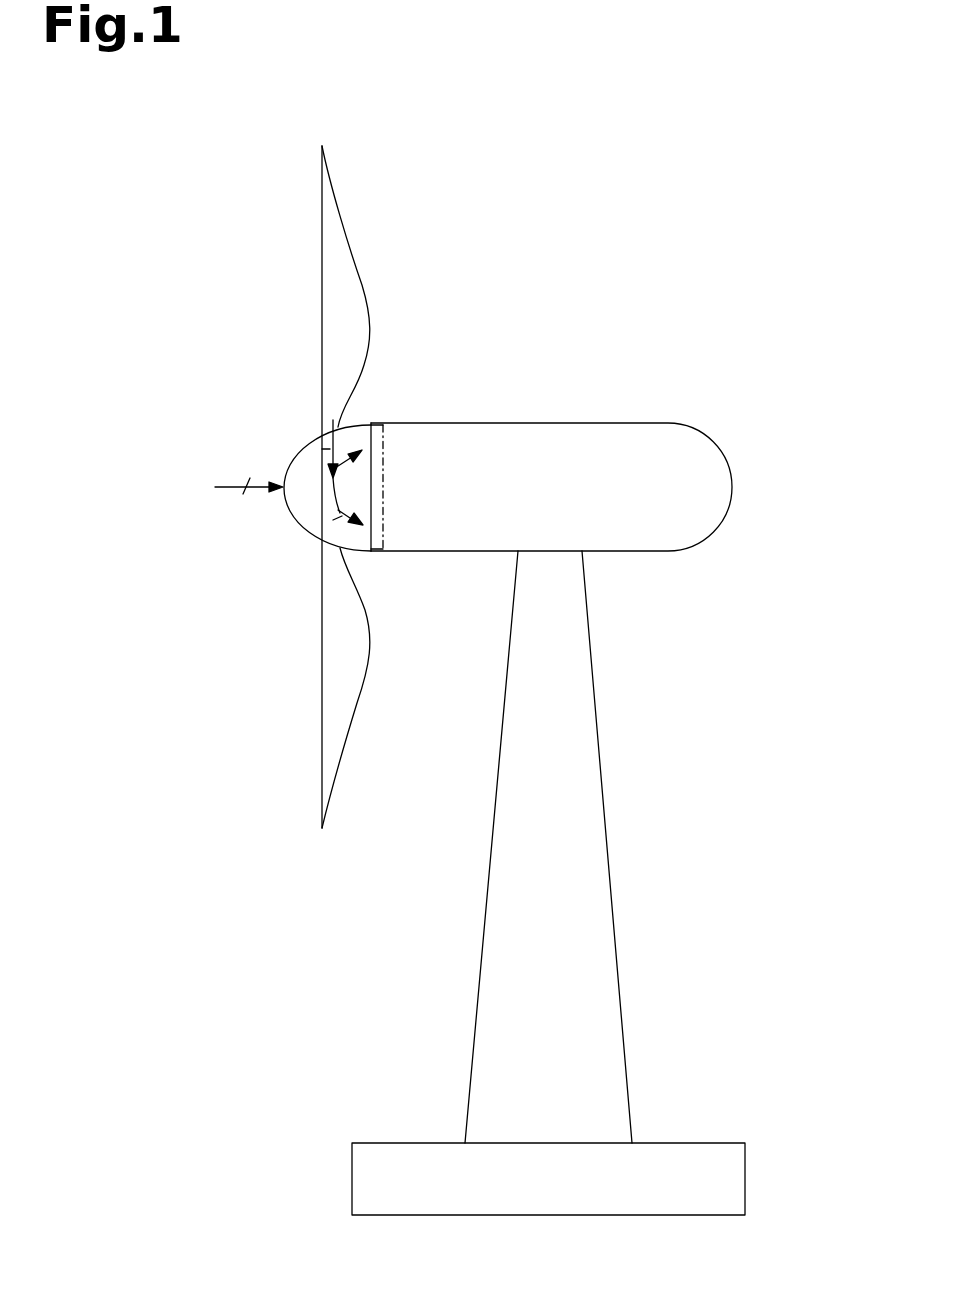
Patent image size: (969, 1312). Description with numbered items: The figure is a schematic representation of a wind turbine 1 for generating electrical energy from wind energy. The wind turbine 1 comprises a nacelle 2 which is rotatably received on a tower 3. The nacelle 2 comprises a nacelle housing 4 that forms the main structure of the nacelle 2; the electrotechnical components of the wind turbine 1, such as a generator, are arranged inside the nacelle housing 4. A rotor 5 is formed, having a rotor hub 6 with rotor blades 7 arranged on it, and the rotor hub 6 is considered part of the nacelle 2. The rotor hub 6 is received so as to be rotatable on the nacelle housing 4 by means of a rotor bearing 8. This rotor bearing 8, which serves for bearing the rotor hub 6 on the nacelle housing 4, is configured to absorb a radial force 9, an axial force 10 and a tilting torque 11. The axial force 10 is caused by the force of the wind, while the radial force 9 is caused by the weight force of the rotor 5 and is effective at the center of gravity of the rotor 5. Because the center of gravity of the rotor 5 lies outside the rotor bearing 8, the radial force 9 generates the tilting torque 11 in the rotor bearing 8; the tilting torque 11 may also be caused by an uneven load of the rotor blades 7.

The wind turbine 1 is at (645, 185).
The nacelle 2 is at (627, 333).
The tower 3 is at (577, 800).
The nacelle housing 4 is at (625, 438).
The rotor 5 is at (282, 447).
The rotor hub 6 is at (327, 528).
The rotor blades 7 is at (347, 305).
The rotor bearing 8 is at (385, 419).
The radial force 9 is at (333, 458).
The axial force 10 is at (245, 487).
The tilting torque 11 is at (337, 508).